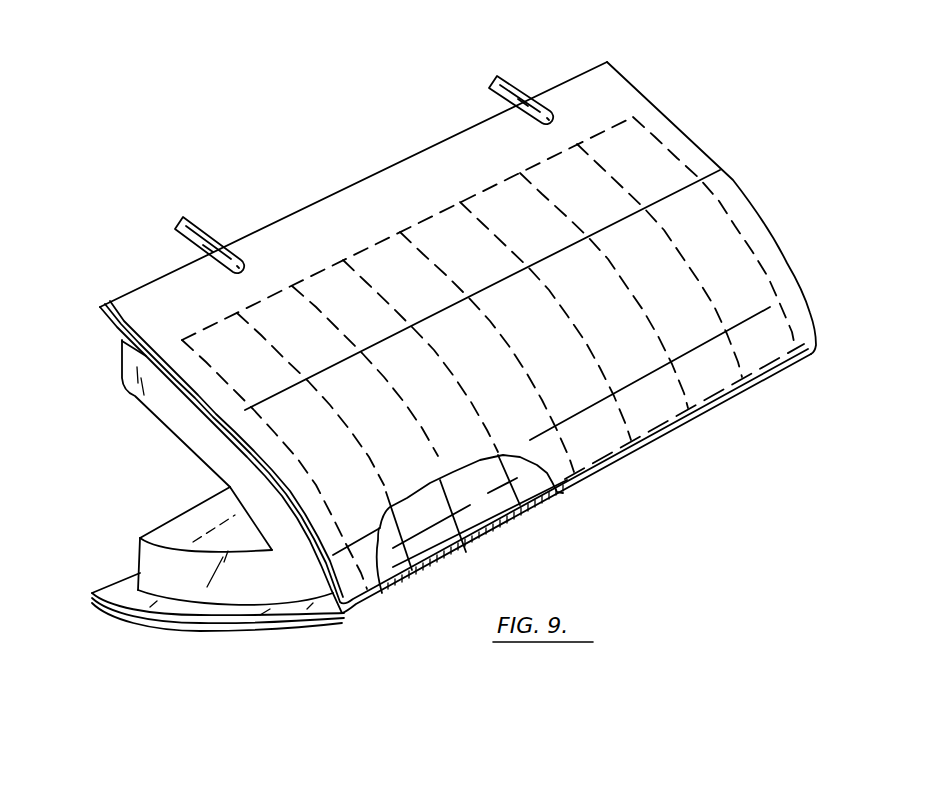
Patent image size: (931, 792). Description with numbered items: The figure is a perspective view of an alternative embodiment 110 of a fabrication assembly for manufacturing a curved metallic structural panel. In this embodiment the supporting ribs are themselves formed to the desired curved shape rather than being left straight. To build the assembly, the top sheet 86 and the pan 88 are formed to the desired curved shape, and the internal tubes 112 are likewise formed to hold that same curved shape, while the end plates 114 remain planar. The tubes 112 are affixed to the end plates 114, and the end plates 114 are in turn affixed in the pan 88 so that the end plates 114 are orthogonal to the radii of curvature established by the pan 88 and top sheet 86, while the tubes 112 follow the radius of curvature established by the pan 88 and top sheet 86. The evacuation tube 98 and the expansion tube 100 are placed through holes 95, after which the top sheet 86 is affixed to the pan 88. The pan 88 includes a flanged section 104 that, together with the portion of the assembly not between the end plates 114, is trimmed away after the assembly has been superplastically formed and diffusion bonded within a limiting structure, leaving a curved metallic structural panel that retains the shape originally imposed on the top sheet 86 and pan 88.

The top sheet 86 is at (625, 103).
The pan 88 is at (165, 407).
The holes 95 is at (213, 245).
The evacuation tube 98 is at (188, 222).
The expansion tube 100 is at (498, 76).
The flanged section 104 is at (111, 585).
The alternative embodiment of the fabrication assembly 110 is at (613, 514).
The internal tubes 112 is at (487, 524).
The end plates 114 is at (332, 264).